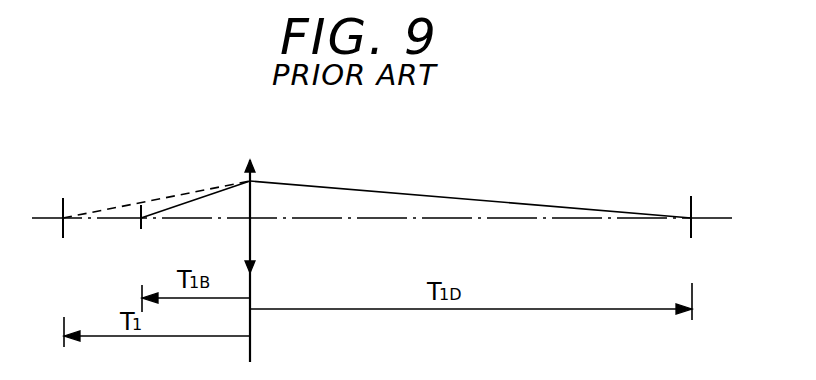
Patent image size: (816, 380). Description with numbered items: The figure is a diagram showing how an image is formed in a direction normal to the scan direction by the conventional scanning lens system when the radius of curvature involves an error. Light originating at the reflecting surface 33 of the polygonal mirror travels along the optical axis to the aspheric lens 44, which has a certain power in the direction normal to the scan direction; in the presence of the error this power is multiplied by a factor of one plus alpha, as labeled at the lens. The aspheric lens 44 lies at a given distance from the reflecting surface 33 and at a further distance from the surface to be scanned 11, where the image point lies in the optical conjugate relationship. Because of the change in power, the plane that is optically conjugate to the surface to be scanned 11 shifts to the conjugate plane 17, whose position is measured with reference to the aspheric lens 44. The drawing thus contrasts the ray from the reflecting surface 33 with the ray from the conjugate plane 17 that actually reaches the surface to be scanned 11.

The reflecting surface 33 is at (63, 190).
The conjugate plane 17 is at (136, 224).
The aspheric lens 44 is at (250, 130).
The surface to be scanned 11 is at (690, 190).